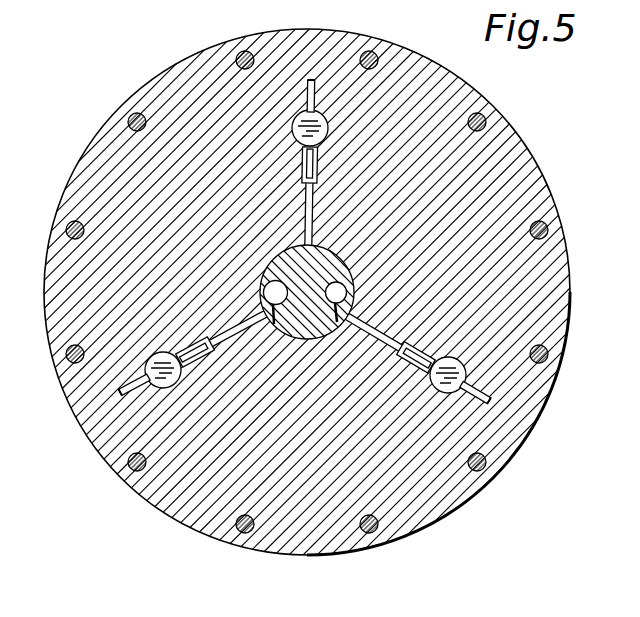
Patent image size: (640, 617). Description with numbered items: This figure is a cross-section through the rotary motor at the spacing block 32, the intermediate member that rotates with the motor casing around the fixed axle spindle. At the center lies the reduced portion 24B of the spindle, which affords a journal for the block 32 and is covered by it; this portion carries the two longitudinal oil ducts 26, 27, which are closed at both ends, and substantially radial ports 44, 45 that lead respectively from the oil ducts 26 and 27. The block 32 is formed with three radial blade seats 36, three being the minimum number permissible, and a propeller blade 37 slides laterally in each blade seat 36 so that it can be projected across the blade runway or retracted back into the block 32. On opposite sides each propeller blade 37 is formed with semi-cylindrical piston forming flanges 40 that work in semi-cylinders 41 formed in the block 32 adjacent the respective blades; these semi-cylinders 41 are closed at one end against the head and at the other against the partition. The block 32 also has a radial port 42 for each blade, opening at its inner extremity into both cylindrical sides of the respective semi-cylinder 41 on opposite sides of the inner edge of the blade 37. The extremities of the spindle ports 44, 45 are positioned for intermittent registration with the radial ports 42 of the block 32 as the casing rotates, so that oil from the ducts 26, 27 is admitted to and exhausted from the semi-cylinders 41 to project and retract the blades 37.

The spacing block 32 is at (456, 503).
The reduced portion of spindle 24B is at (332, 247).
The oil duct 26 is at (346, 291).
The oil duct 27 is at (278, 294).
The radial port 44 is at (338, 318).
The radial port 45 is at (283, 333).
The piston forming flange 40 is at (328, 125).
The semi-cylinder 41 is at (330, 142).
The radial port 42 is at (212, 347).
The radial blade seat 36 is at (327, 120).
The propeller blade 37 is at (318, 92).